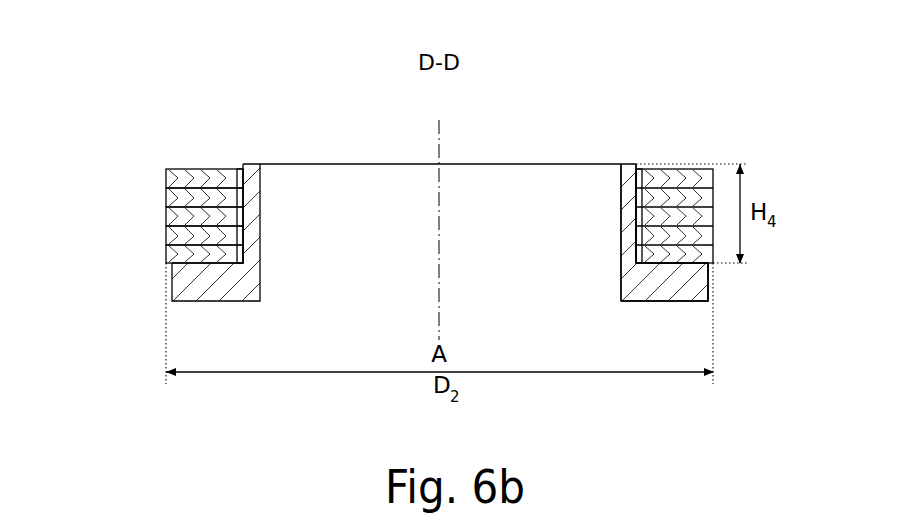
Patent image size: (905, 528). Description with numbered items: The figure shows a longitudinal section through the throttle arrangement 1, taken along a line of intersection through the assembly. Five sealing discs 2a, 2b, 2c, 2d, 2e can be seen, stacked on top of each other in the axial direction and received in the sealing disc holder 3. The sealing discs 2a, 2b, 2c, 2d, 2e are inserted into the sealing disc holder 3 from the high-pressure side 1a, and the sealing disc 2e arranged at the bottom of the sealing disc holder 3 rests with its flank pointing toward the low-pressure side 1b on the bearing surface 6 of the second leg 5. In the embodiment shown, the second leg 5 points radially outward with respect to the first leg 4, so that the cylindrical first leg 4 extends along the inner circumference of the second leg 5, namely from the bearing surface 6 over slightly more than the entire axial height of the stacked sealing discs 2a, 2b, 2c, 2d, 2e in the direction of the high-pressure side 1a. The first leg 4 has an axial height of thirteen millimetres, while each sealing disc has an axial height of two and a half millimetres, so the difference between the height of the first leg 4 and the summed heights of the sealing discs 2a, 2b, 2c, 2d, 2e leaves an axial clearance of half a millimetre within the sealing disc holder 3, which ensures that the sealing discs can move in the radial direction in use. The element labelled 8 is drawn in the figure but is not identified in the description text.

The throttle arrangement 1 is at (431, 191).
The high-pressure side 1a is at (426, 113).
The low-pressure side 1b is at (426, 440).
The sealing disc 2a is at (178, 176).
The sealing disc 2b is at (178, 195).
The sealing disc 2c is at (178, 215).
The sealing disc 2d is at (178, 237).
The sealing disc 2e is at (178, 256).
The sealing disc holder 3 is at (564, 160).
The first leg 4 is at (627, 172).
The second leg 5 is at (712, 283).
The bearing surface 6 is at (655, 266).
The intermediate layer 8 is at (648, 177).